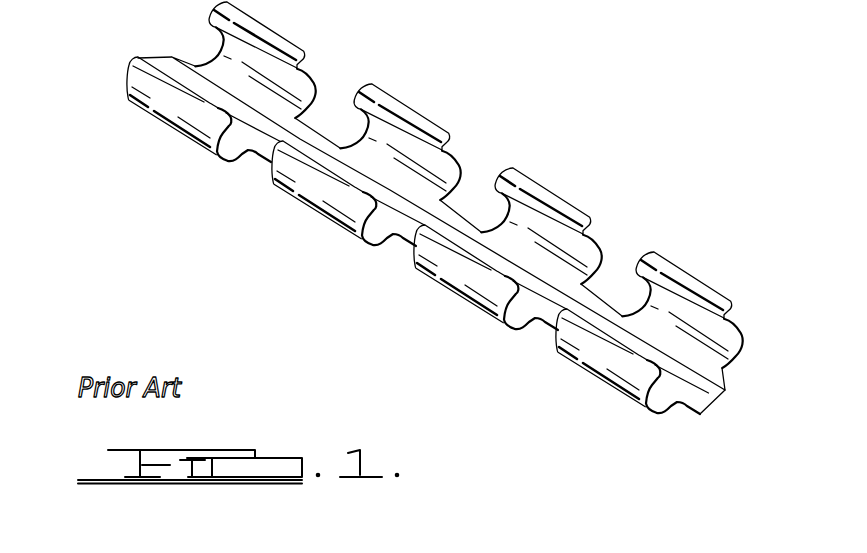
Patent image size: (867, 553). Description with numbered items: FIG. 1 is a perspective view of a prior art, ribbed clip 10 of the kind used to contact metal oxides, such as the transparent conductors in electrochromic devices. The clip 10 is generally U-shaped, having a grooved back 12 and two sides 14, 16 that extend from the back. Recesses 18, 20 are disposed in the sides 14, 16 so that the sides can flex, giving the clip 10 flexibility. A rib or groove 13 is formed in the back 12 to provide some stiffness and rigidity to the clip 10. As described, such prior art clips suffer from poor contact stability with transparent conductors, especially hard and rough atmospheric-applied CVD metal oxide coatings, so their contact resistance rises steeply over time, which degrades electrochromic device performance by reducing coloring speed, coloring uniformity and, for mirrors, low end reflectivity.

The clip 10 is at (228, 323).
The grooved back 12 is at (727, 389).
The rib or groove 13 is at (724, 394).
The side 14 is at (744, 330).
The side 16 is at (634, 377).
The recess 18 is at (618, 246).
The recess 20 is at (533, 338).